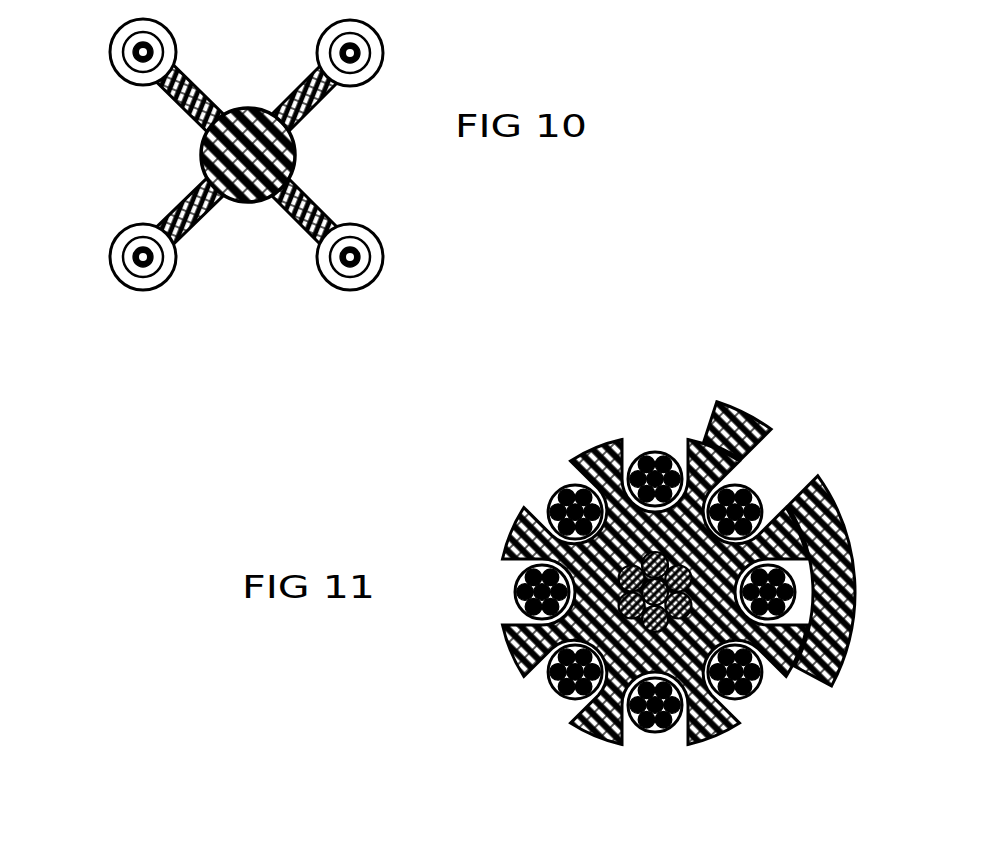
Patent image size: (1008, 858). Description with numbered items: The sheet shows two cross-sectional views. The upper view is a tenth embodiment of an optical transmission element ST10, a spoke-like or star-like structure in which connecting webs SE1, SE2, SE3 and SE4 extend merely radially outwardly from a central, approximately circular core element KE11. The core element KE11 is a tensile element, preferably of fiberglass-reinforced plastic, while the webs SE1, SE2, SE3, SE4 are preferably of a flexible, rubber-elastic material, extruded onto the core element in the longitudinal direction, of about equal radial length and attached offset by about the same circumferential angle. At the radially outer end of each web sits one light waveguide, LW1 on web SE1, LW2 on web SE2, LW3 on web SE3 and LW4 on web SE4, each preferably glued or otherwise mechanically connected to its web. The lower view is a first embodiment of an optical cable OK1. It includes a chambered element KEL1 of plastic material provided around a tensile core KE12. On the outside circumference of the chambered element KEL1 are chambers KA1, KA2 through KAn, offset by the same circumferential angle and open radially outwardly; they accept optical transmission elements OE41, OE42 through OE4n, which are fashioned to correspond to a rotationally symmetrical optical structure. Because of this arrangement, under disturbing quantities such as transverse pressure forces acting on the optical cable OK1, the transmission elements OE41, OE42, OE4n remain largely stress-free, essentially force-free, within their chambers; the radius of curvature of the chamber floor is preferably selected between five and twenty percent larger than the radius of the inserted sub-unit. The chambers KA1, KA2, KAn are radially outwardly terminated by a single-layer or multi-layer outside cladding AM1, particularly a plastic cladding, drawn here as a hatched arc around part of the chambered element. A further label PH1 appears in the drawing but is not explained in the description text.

In FIG. 10, the light waveguide LW1 is at (112, 52).
In FIG. 10, the light waveguide LW2 is at (386, 54).
In FIG. 10, the light waveguide LW3 is at (386, 258).
In FIG. 10, the light waveguide LW4 is at (112, 256).
In FIG. 10, the connecting web SE1 is at (198, 86).
In FIG. 10, the connecting web SE2 is at (299, 84).
In FIG. 10, the connecting web SE3 is at (272, 217).
In FIG. 10, the connecting web SE4 is at (172, 214).
In FIG. 10, the core element KE11 is at (296, 134).
In FIG. 10, the optical transmission element ST10 is at (370, 190).
In FIG. 11, the outside cladding AM1 is at (822, 486).
In FIG. 11, the profile holder body PH1 is at (553, 500).
In FIG. 11, the tensile core KE12 is at (633, 627).
In FIG. 11, the chamber KA1 is at (568, 474).
In FIG. 11, the chamber KA2 is at (678, 455).
In FIG. 11, the chamber KAn is at (515, 572).
In FIG. 11, the optical transmission element OE42 is at (640, 445).
In FIG. 11, the optical transmission element OE41 is at (540, 487).
In FIG. 11, the optical transmission element OE4n is at (495, 610).
In FIG. 11, the optical cable OK1 is at (520, 705).
In FIG. 11, the chambered element KEL1 is at (725, 730).